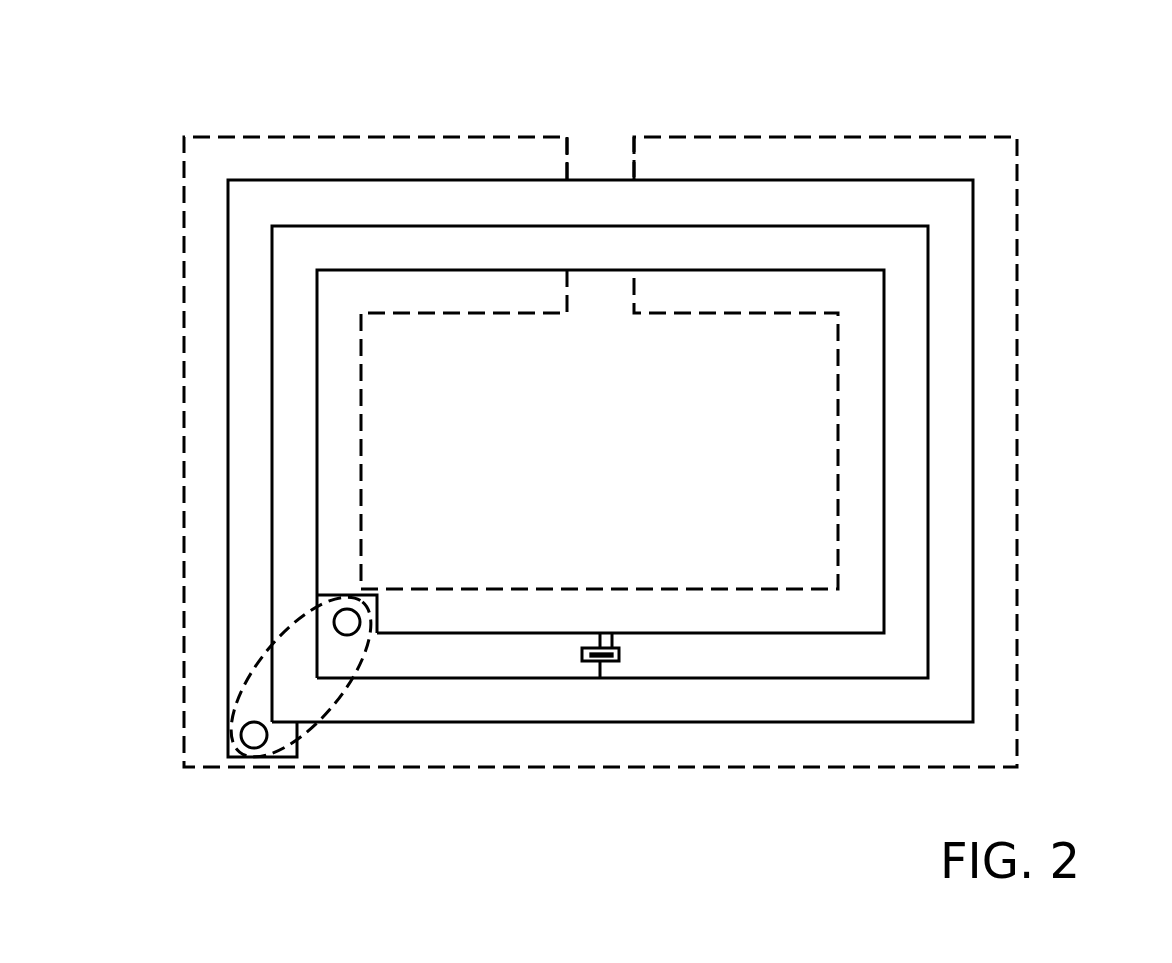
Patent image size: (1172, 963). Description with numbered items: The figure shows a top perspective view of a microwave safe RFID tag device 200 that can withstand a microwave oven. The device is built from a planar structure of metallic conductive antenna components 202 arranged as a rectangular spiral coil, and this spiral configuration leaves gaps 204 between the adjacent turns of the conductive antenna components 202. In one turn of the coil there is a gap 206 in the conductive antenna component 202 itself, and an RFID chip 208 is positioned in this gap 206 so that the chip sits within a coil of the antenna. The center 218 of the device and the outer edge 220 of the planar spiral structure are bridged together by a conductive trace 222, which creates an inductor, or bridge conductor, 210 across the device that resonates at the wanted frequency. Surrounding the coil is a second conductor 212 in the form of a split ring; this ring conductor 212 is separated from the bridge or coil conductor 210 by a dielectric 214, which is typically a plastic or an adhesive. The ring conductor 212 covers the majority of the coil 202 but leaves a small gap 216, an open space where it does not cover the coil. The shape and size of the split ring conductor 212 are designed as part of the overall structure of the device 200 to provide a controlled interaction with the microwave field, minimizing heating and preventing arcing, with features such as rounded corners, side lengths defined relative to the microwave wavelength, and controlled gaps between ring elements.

The RFID tag device 200 is at (950, 88).
The conductive antenna components 202 is at (965, 650).
The gaps 204 is at (928, 530).
The gap 206 is at (600, 677).
The RFID chip 208 is at (612, 648).
The inductor (bridge conductor) 210 is at (302, 703).
The second conductor (ring conductor) 212 is at (1008, 255).
The dielectric 214 is at (210, 542).
The gap 216 is at (603, 136).
The center 218 is at (371, 578).
The outer edge 220 is at (244, 770).
The conductive trace 222 is at (350, 623).